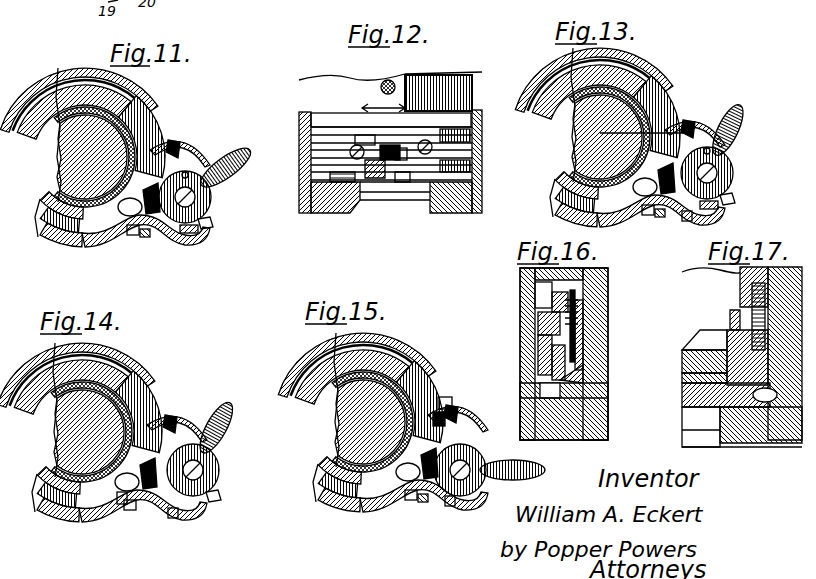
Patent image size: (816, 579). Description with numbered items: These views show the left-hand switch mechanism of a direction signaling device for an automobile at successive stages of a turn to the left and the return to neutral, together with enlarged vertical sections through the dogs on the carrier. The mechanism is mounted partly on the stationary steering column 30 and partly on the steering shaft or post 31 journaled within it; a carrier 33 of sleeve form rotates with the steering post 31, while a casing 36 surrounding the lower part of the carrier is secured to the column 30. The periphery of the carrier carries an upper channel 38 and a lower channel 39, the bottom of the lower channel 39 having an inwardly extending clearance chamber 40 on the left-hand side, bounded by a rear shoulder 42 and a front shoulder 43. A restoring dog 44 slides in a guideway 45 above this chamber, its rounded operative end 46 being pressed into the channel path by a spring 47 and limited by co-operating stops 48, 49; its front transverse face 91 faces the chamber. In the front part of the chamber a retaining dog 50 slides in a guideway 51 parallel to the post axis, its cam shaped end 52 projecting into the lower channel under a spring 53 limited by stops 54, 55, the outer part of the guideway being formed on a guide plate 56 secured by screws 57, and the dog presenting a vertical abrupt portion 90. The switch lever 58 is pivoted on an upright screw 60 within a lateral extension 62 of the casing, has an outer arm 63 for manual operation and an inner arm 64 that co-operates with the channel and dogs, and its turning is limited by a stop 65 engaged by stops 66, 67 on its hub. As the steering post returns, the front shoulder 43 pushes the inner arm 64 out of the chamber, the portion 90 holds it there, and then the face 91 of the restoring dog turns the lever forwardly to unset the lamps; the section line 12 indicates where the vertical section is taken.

In FIG. 11, the section line 12 is at (90, 82).
In FIG. 16, the steering column 30 is at (607, 431).
In FIG. 17, the steering column 30 is at (790, 440).
In FIG. 11, the steering shaft or post 31 is at (125, 137).
In FIG. 12, the steering shaft or post 31 is at (370, 195).
In FIG. 14, the steering shaft or post 31 is at (122, 392).
In FIG. 15, the steering shaft or post 31 is at (345, 425).
In FIG. 12, the carrier 33 is at (450, 82).
In FIG. 11, the casing 36 is at (196, 243).
In FIG. 13, the casing 36 is at (640, 63).
In FIG. 14, the casing 36 is at (190, 513).
In FIG. 12, the upper circumferential locking groove or channel 38 is at (312, 122).
In FIG. 16, the upper circumferential locking groove or channel 38 is at (535, 292).
In FIG. 11, the lower circumferential locking groove or channel 39 is at (56, 240).
In FIG. 12, the lower circumferential locking groove or channel 39 is at (312, 190).
In FIG. 14, the lower circumferential locking groove or channel 39 is at (100, 521).
In FIG. 15, the lower circumferential locking groove or channel 39 is at (365, 512).
In FIG. 16, the lower circumferential locking groove or channel 39 is at (548, 398).
In FIG. 11, the clearance chamber 40 is at (132, 238).
In FIG. 12, the clearance chamber 40 is at (395, 200).
In FIG. 13, the clearance chamber 40 is at (626, 228).
In FIG. 14, the clearance chamber 40 is at (134, 505).
In FIG. 15, the clearance chamber 40 is at (431, 495).
In FIG. 11, the rear shoulder 42 is at (68, 197).
In FIG. 12, the rear shoulder 42 is at (474, 170).
In FIG. 11, the front shoulder 43 is at (165, 135).
In FIG. 12, the front shoulder 43 is at (400, 205).
In FIG. 12, the restoring dog 44 is at (430, 195).
In FIG. 14, the restoring dog 44 is at (124, 500).
In FIG. 17, the restoring dog 44 is at (720, 420).
In FIG. 12, the guideway 45 is at (470, 145).
In FIG. 17, the guideway 45 is at (801, 300).
In FIG. 11, the lower or operative end 46 is at (147, 230).
In FIG. 12, the lower or operative end 46 is at (482, 206).
In FIG. 13, the lower or operative end 46 is at (636, 236).
In FIG. 15, the lower or operative end 46 is at (468, 500).
In FIG. 17, the lower or operative end 46 is at (685, 376).
In FIG. 12, the spring 47 is at (412, 135).
In FIG. 17, the spring 47 is at (750, 295).
In FIG. 17, the stop 48 is at (705, 300).
In FIG. 17, the stop 49 is at (720, 305).
In FIG. 12, the retaining dog 50 is at (318, 212).
In FIG. 16, the retaining dog 50 is at (583, 350).
In FIG. 12, the guideway 51 is at (340, 120).
In FIG. 16, the guideway 51 is at (583, 332).
In FIG. 11, the lower curved or cam shaped end 52 is at (200, 148).
In FIG. 12, the lower curved or cam shaped end 52 is at (378, 200).
In FIG. 13, the lower curved or cam shaped end 52 is at (586, 186).
In FIG. 14, the lower curved or cam shaped end 52 is at (178, 411).
In FIG. 15, the lower curved or cam shaped end 52 is at (458, 419).
In FIG. 16, the lower curved or cam shaped end 52 is at (570, 385).
In FIG. 16, the spring 53 is at (608, 276).
In FIG. 12, the stop 54 is at (370, 140).
In FIG. 16, the stop 54 is at (538, 326).
In FIG. 12, the stop 55 is at (312, 150).
In FIG. 16, the stop 55 is at (538, 356).
In FIG. 12, the guide plate 56 is at (392, 130).
In FIG. 15, the guide plate 56 is at (449, 410).
In FIG. 16, the guide plate 56 is at (552, 365).
In FIG. 17, the guide plate 56 is at (690, 350).
In FIG. 12, the screws 57 is at (345, 150).
In FIG. 11, the switch lever 58 is at (212, 192).
In FIG. 13, the switch lever 58 is at (730, 170).
In FIG. 14, the switch lever 58 is at (210, 448).
In FIG. 15, the switch lever 58 is at (480, 480).
In FIG. 17, the switch lever 58 is at (683, 401).
In FIG. 11, the upright screw 60 is at (197, 203).
In FIG. 13, the upright screw 60 is at (712, 185).
In FIG. 14, the upright screw 60 is at (205, 462).
In FIG. 15, the upright screw 60 is at (460, 470).
In FIG. 11, the lateral extension 62 is at (205, 236).
In FIG. 13, the lateral extension 62 is at (700, 125).
In FIG. 11, the outer arm 63 is at (225, 167).
In FIG. 13, the outer arm 63 is at (745, 110).
In FIG. 15, the outer arm 63 is at (512, 470).
In FIG. 11, the inner arm 64 is at (152, 217).
In FIG. 13, the inner arm 64 is at (672, 212).
In FIG. 15, the inner arm 64 is at (475, 415).
In FIG. 17, the inner arm 64 is at (765, 395).
In FIG. 13, the stop 65 is at (700, 226).
In FIG. 14, the stop 65 is at (178, 520).
In FIG. 15, the stop 65 is at (445, 505).
In FIG. 11, the stop 66 is at (195, 182).
In FIG. 13, the stop 66 is at (692, 165).
In FIG. 14, the stop 66 is at (158, 500).
In FIG. 11, the stop 67 is at (207, 226).
In FIG. 13, the stop 67 is at (735, 200).
In FIG. 14, the stop 67 is at (205, 486).
In FIG. 12, the vertical abrupt portion 90 is at (345, 200).
In FIG. 15, the vertical abrupt portion 90 is at (446, 400).
In FIG. 16, the vertical abrupt portion 90 is at (540, 392).
In FIG. 12, the front transverse face 91 is at (420, 205).
In FIG. 13, the front transverse face 91 is at (576, 212).
In FIG. 14, the front transverse face 91 is at (82, 524).
In FIG. 15, the front transverse face 91 is at (392, 512).